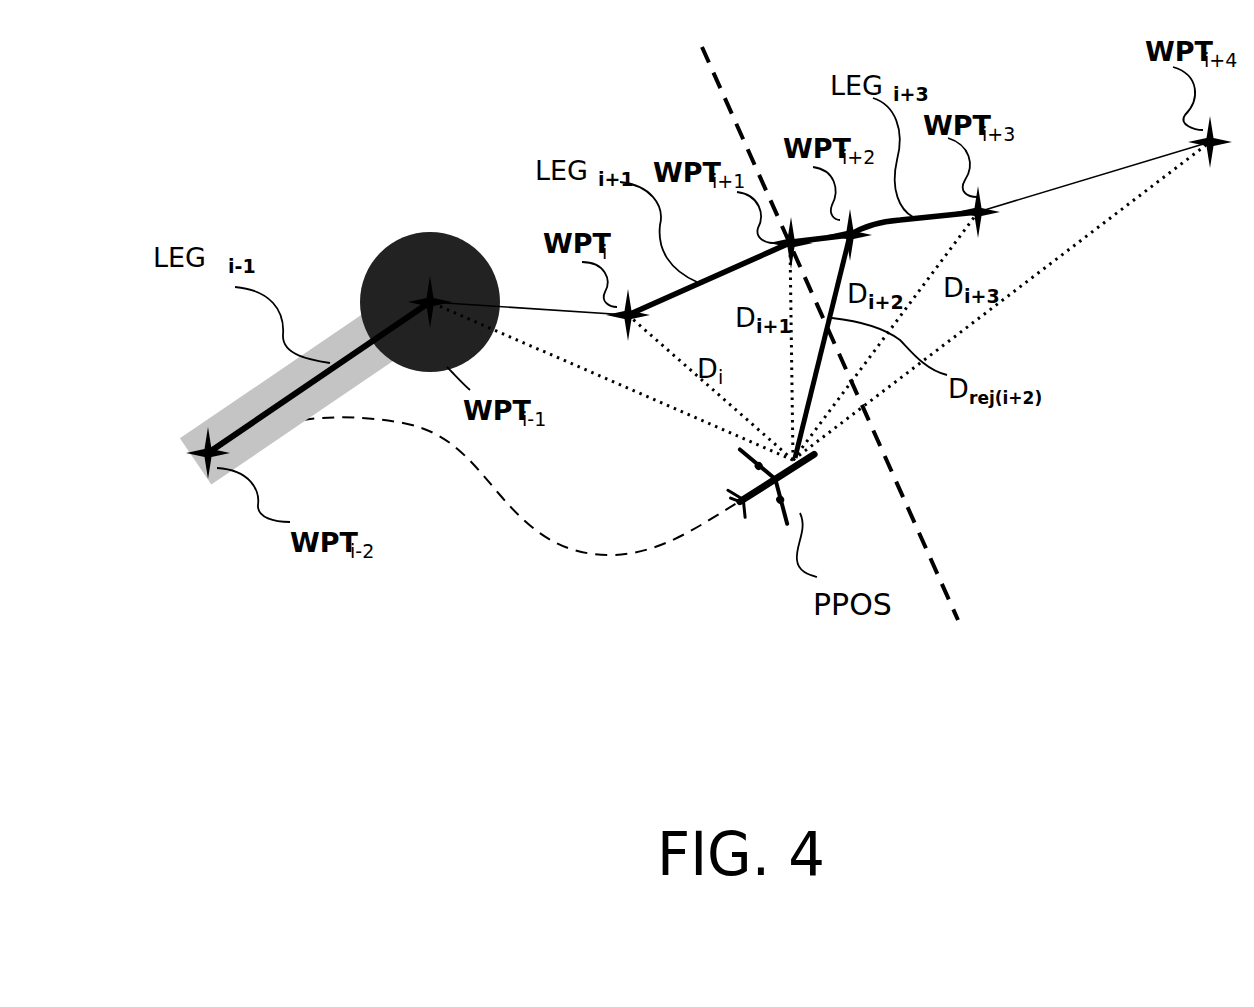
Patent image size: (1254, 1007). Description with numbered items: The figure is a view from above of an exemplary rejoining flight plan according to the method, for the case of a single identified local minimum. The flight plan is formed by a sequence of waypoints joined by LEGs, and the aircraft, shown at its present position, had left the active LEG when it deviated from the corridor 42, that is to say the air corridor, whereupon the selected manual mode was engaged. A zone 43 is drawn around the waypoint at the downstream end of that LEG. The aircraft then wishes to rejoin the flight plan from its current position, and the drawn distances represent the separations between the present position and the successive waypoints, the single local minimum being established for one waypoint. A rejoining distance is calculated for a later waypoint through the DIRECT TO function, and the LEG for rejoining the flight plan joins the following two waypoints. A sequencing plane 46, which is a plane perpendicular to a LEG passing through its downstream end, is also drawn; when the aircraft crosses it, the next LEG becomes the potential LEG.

The corridor 42 is at (233, 403).
The proximity zone circle around waypoint WPT i-1 43 is at (385, 250).
The sequencing plane 46 is at (942, 582).